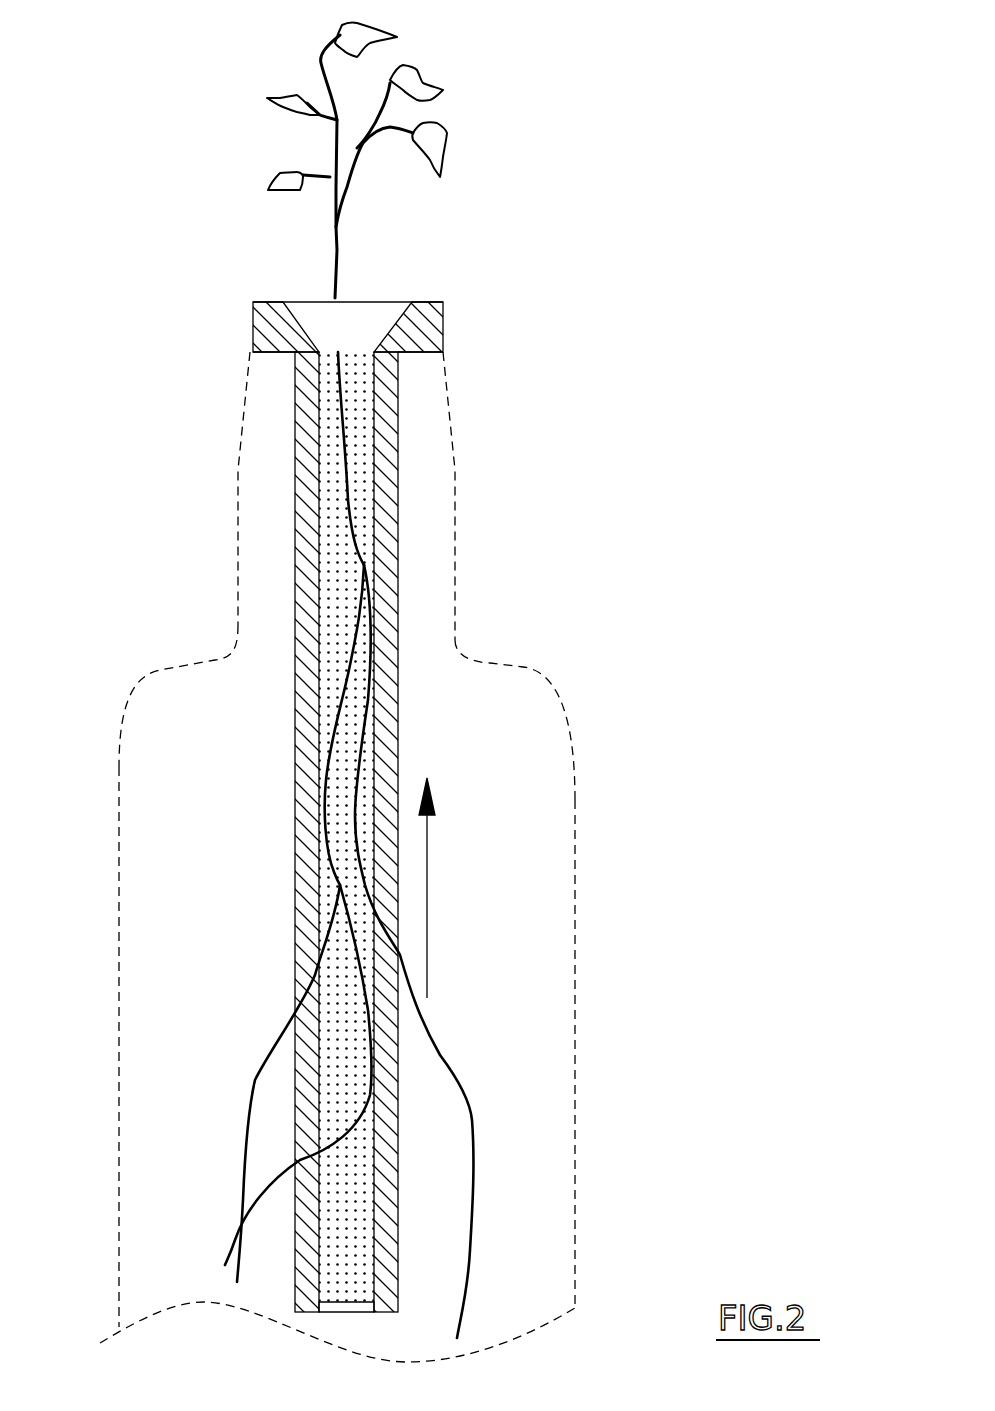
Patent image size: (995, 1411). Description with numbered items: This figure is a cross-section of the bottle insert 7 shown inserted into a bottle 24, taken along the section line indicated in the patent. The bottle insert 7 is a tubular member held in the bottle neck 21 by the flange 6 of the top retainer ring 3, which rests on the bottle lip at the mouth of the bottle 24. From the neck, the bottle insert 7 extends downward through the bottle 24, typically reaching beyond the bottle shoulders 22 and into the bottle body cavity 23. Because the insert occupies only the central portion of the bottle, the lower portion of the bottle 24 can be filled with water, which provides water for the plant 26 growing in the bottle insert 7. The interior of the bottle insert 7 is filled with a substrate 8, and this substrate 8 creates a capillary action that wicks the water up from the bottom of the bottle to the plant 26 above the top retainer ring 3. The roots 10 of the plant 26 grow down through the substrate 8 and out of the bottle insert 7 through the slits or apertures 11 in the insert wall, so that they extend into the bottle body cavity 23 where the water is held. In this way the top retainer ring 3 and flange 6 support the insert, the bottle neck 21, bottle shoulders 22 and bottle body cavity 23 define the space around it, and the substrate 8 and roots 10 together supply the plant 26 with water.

The top retainer ring 3 is at (418, 300).
The flange 6 is at (273, 355).
The bottle insert 7 is at (398, 745).
The substrate 8 is at (356, 420).
The roots 10 is at (465, 1266).
The slits or apertures 11 is at (333, 965).
The bottle neck 21 is at (448, 396).
The bottle shoulders 22 is at (143, 682).
The bottle body cavity 23 is at (197, 1130).
The bottle 24 is at (575, 1278).
The plant 26 is at (447, 152).